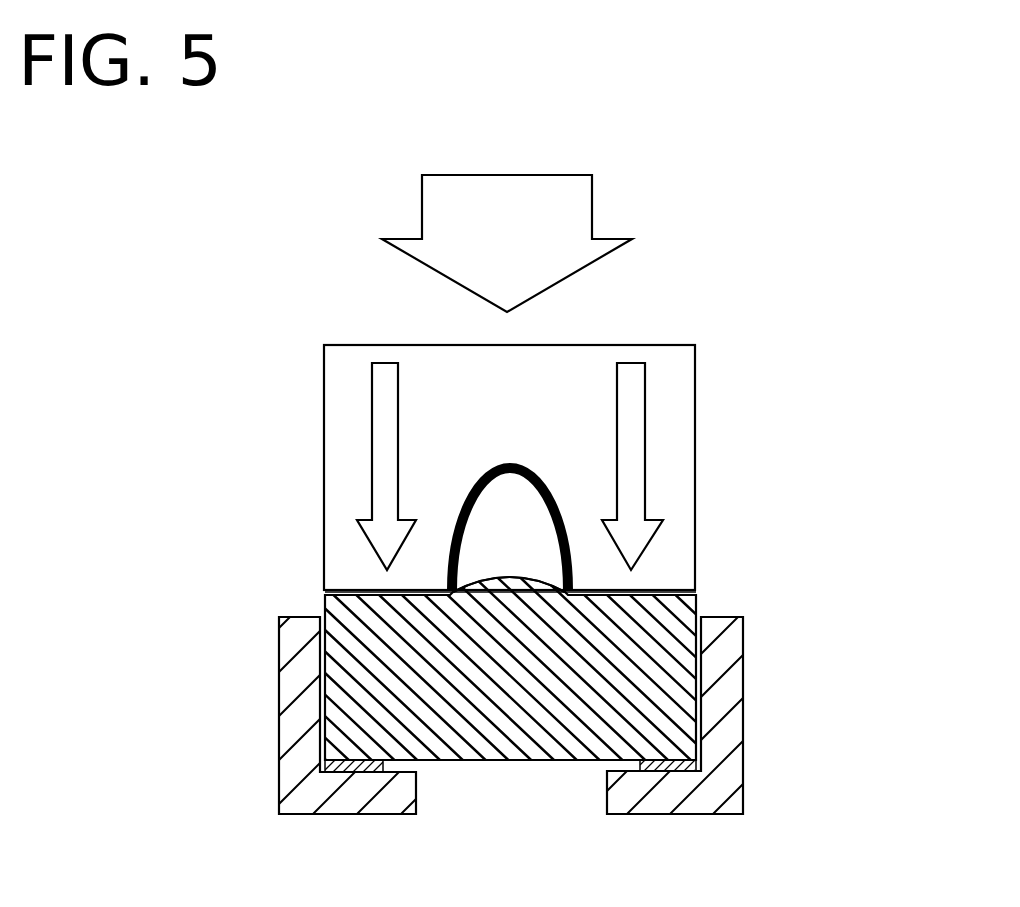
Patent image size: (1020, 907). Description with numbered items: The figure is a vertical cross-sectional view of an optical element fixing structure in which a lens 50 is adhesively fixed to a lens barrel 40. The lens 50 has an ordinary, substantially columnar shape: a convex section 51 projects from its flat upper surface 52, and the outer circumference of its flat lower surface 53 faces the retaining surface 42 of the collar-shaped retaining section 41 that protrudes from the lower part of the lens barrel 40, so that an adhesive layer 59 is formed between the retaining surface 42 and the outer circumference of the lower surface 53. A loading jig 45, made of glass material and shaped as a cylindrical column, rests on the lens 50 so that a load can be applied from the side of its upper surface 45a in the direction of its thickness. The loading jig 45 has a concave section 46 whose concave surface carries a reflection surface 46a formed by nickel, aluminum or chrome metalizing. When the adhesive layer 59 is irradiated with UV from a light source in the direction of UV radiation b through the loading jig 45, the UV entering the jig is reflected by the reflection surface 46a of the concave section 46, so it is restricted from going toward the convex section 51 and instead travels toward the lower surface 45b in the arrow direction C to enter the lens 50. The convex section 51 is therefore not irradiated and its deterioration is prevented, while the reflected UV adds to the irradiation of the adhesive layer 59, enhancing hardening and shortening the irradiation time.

The direction of UV radiation b is at (572, 208).
The loading jig 45 is at (713, 375).
The upper surface 45a is at (675, 345).
The lower surface 45b is at (657, 590).
The arrow direction C is at (380, 395).
The concave section 46 is at (488, 518).
The reflection surface 46a is at (492, 467).
The lens 50 is at (323, 688).
The convex section 51 is at (493, 576).
The upper surface 52 is at (365, 589).
The lens barrel 40 is at (747, 712).
The adhesive layer 59 is at (352, 768).
The retaining surface 42 is at (417, 763).
The lower surface 53 is at (540, 762).
The retaining section 41 is at (672, 790).